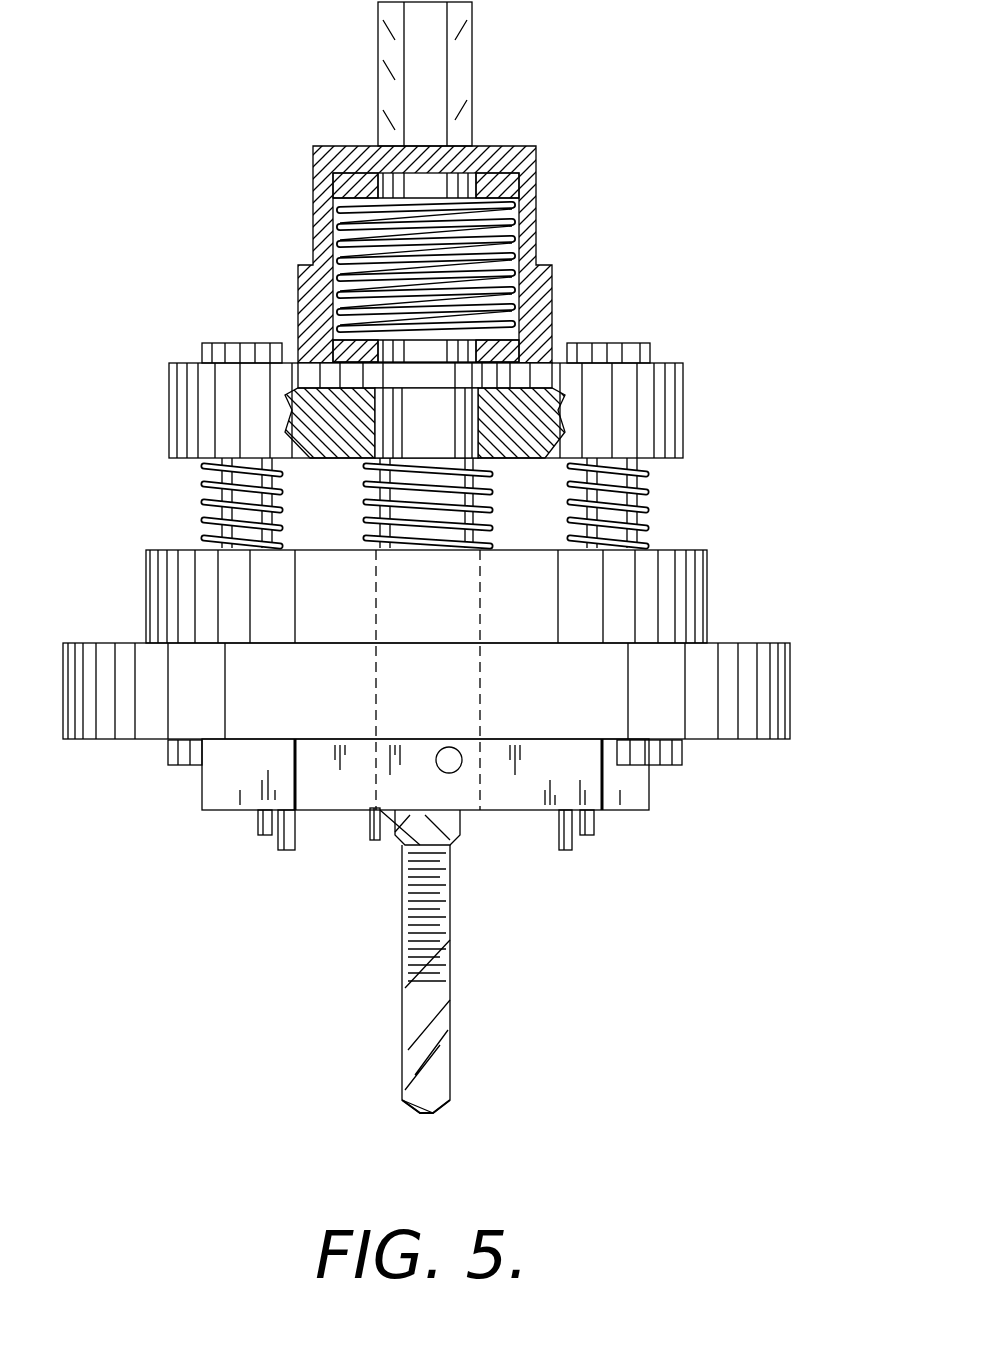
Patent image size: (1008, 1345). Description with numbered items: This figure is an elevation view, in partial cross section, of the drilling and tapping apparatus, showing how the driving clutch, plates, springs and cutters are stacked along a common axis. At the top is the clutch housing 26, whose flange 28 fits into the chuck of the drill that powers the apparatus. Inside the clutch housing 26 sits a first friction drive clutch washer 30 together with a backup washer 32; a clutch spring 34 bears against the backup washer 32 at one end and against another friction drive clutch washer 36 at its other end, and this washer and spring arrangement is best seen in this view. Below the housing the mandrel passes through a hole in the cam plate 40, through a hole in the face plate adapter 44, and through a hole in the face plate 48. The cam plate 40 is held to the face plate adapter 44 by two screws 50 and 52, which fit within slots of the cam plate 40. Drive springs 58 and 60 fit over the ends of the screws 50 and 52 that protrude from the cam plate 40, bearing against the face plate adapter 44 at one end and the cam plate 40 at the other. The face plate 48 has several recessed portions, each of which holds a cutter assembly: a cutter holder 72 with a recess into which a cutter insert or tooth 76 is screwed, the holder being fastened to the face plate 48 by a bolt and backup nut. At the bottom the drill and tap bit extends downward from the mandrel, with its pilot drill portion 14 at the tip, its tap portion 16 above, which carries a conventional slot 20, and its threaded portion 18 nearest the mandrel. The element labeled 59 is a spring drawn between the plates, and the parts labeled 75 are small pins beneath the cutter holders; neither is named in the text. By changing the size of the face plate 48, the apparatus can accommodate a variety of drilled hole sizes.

The pilot drill portion 14 is at (410, 1092).
The tap portion 16 is at (408, 1008).
The threaded portion 18 is at (410, 905).
The slot 20 is at (385, 420).
The clutch housing 26 is at (540, 160).
The flange 28 is at (465, 78).
The first friction drive clutch washer 30 is at (318, 385).
The backup washer 32 is at (318, 340).
The clutch spring 34 is at (515, 245).
The friction drive clutch washer 36 is at (345, 186).
The cam plate 40 is at (645, 408).
The face plate adapter 44 is at (680, 592).
The face plate 48 is at (750, 690).
The screw 50 is at (220, 352).
The screw 52 is at (630, 350).
The drive spring 58 is at (205, 505).
The central spring 59 is at (488, 490).
The drive spring 60 is at (640, 518).
The cutter holder 72 is at (242, 756).
The pin 75 is at (265, 822).
The cutter insert 76 is at (288, 845).